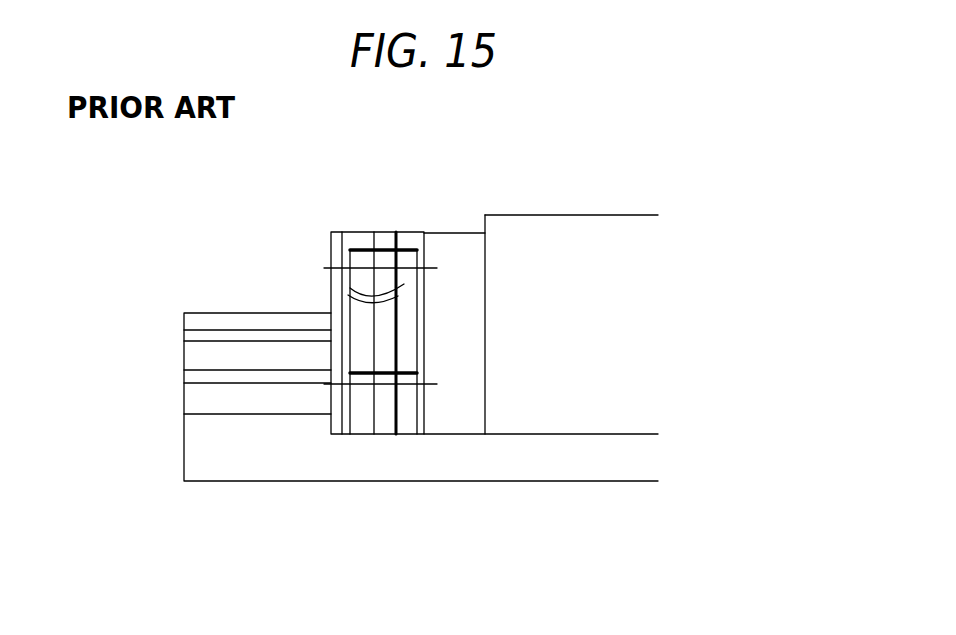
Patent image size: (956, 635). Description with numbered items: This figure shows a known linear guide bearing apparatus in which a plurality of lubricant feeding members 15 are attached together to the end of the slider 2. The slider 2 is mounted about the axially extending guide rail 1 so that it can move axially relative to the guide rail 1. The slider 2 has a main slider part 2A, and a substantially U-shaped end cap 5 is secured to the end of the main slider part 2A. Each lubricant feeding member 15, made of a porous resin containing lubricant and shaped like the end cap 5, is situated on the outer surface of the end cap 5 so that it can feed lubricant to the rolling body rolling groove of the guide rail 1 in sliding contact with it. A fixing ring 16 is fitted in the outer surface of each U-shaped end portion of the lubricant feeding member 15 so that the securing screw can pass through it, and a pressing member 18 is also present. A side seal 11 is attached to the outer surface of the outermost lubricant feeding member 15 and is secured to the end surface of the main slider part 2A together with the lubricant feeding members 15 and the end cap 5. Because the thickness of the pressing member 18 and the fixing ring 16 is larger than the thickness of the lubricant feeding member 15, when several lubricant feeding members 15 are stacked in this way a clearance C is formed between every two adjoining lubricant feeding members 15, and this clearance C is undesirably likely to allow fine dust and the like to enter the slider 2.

The guide rail 1 is at (280, 465).
The slider 2 is at (616, 195).
The main slider part 2A is at (546, 228).
The end cap 5 is at (463, 233).
The side seal 11 is at (338, 232).
The lubricant feeding member 15 is at (377, 232).
The clearance C is at (393, 211).
The pressing member 18 is at (350, 288).
The fixing ring 16 is at (402, 395).